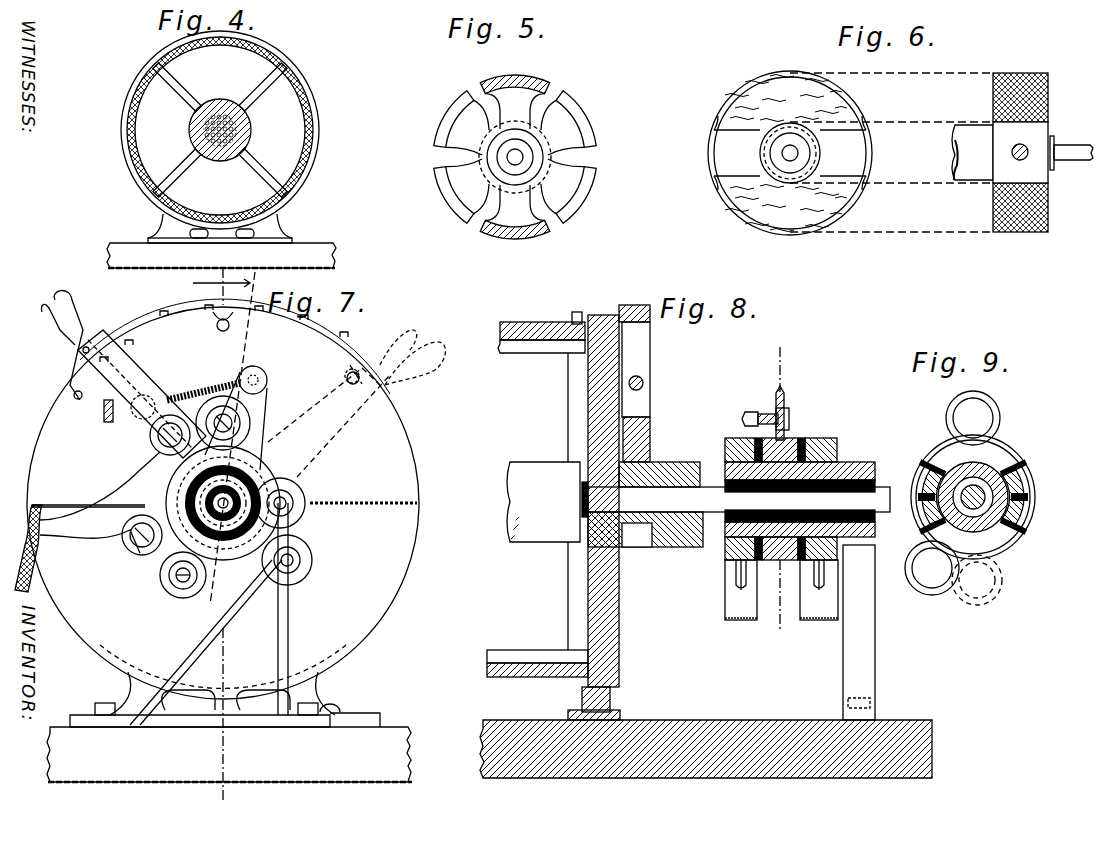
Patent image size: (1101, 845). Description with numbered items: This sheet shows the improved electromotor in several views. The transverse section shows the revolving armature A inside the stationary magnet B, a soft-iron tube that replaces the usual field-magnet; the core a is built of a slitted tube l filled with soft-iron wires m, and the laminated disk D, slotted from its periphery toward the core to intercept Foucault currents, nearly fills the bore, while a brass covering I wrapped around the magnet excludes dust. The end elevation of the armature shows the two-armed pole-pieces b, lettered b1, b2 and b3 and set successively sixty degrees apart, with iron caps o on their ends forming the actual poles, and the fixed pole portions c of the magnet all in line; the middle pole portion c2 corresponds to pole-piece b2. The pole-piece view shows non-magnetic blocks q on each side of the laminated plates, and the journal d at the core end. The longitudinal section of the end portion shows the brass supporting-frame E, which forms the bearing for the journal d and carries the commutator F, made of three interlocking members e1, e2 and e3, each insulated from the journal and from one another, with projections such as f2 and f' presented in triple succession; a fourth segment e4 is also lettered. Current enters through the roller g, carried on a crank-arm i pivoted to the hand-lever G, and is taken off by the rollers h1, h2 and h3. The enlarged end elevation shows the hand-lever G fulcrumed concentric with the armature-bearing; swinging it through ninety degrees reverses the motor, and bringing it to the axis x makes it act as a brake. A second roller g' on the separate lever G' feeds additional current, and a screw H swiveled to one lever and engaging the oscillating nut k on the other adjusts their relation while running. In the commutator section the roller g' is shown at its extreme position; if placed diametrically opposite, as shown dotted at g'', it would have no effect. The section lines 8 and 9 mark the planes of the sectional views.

In FIG. 4, the revolving armature A is at (172, 129).
In FIG. 5, the revolving armature A is at (596, 213).
In FIG. 6, the revolving armature A is at (912, 155).
In FIG. 8, the revolving armature A is at (543, 501).
In FIG. 4, the stationary magnet B is at (145, 95).
In FIG. 8, the stationary magnet B is at (528, 494).
In FIG. 4, the soft-iron disk D is at (276, 127).
In FIG. 4, the covering I is at (150, 172).
In FIG. 4, the tube l is at (220, 122).
In FIG. 4, the soft-iron wires m is at (220, 130).
In FIG. 4, the core a is at (224, 165).
In FIG. 5, the core a is at (515, 157).
In FIG. 6, the core a is at (790, 154).
In FIG. 6, the pole-pieces b is at (790, 153).
In FIG. 5, the first pole-piece b1 is at (515, 191).
In FIG. 5, the second pole-piece b2 is at (515, 123).
In FIG. 6, the second pole-piece b2 is at (1020, 143).
In FIG. 5, the third pole-piece b3 is at (514, 157).
In FIG. 5, the pole portions c is at (520, 160).
In FIG. 5, the iron caps o is at (511, 157).
In FIG. 6, the blocks q is at (790, 153).
In FIG. 6, the journals d is at (1022, 152).
In FIG. 8, the journals d is at (736, 499).
In FIG. 7, the supporting-frame E is at (248, 635).
In FIG. 8, the supporting-frame E is at (609, 512).
In FIG. 7, the commutator F is at (223, 503).
In FIG. 8, the commutator F is at (812, 413).
In FIG. 9, the commutator F is at (973, 488).
In FIG. 7, the hand-lever G is at (110, 441).
In FIG. 8, the hand-lever G is at (645, 493).
In FIG. 7, the second lever G' is at (357, 403).
In FIG. 7, the screw H is at (203, 385).
In FIG. 7, the oscillating nut k is at (231, 412).
In FIG. 7, the crank-arm i is at (164, 506).
In FIG. 8, the crank-arm i is at (765, 411).
In FIG. 7, the middle pole portion c2 is at (232, 482).
In FIG. 8, the middle pole portion c2 is at (775, 451).
In FIG. 8, the first commutator member e1 is at (734, 496).
In FIG. 9, the first commutator member e1 is at (925, 491).
In FIG. 8, the middle commutator member e2 is at (800, 499).
In FIG. 9, the middle commutator member e2 is at (956, 500).
In FIG. 8, the third commutator member e3 is at (825, 494).
In FIG. 9, the third commutator member e3 is at (1023, 489).
In FIG. 9, the commutator segment e4 is at (1046, 528).
In FIG. 8, the projection f2 is at (774, 552).
In FIG. 9, the projection f2 is at (1006, 467).
In FIG. 9, the projection f' is at (998, 544).
In FIG. 8, the roller g is at (787, 412).
In FIG. 9, the roller g is at (973, 418).
In FIG. 7, the second roller g' is at (218, 591).
In FIG. 9, the second roller g' is at (932, 568).
In FIG. 9, the diametrically opposite roller position g'' is at (986, 580).
In FIG. 7, the take-off roller h1 is at (301, 609).
In FIG. 8, the take-off roller h1 is at (732, 590).
In FIG. 7, the take-off roller h2 is at (336, 501).
In FIG. 8, the take-off roller h2 is at (859, 632).
In FIG. 7, the take-off roller h3 is at (293, 560).
In FIG. 8, the take-off roller h3 is at (819, 590).
In FIG. 7, the section line 8 is at (226, 535).
In FIG. 8, the section line 9 is at (781, 490).
In FIG. 7, the axis x is at (228, 444).